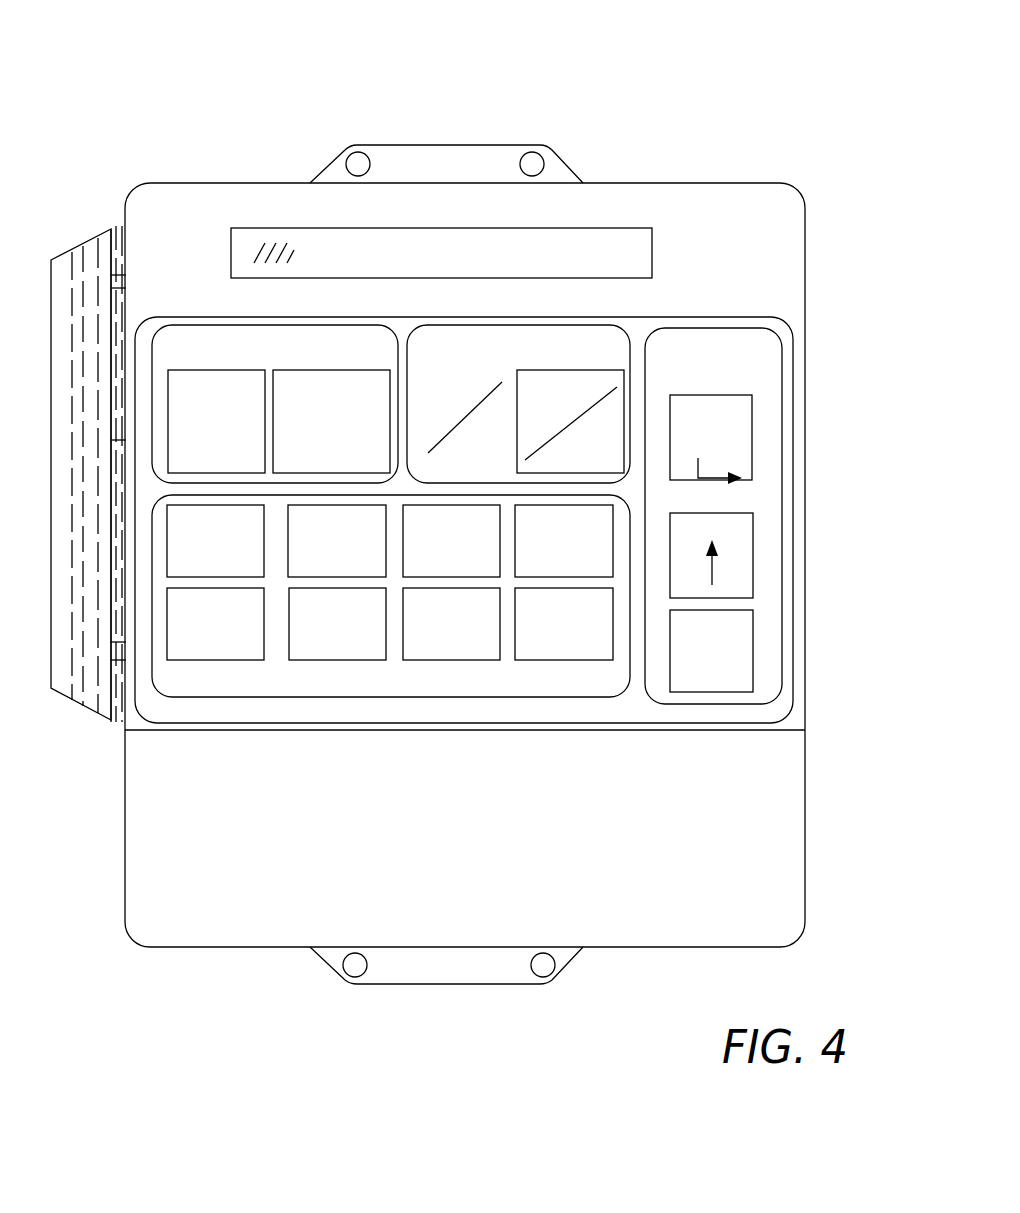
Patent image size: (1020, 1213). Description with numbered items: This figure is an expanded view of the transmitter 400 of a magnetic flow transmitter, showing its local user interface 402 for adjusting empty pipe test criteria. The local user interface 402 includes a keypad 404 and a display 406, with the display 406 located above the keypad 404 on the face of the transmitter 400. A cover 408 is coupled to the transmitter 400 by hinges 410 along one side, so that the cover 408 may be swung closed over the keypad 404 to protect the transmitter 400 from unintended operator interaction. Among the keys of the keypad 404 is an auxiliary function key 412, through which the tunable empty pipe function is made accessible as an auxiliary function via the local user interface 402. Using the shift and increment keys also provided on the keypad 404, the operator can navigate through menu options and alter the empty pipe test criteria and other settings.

The transmitter 400 is at (733, 92).
The local user interface 402 is at (855, 377).
The keypad 404 is at (788, 322).
The display 406 is at (637, 247).
The cover 408 is at (84, 247).
The hinges 410 is at (120, 272).
The auxiliary function key 412 is at (602, 568).